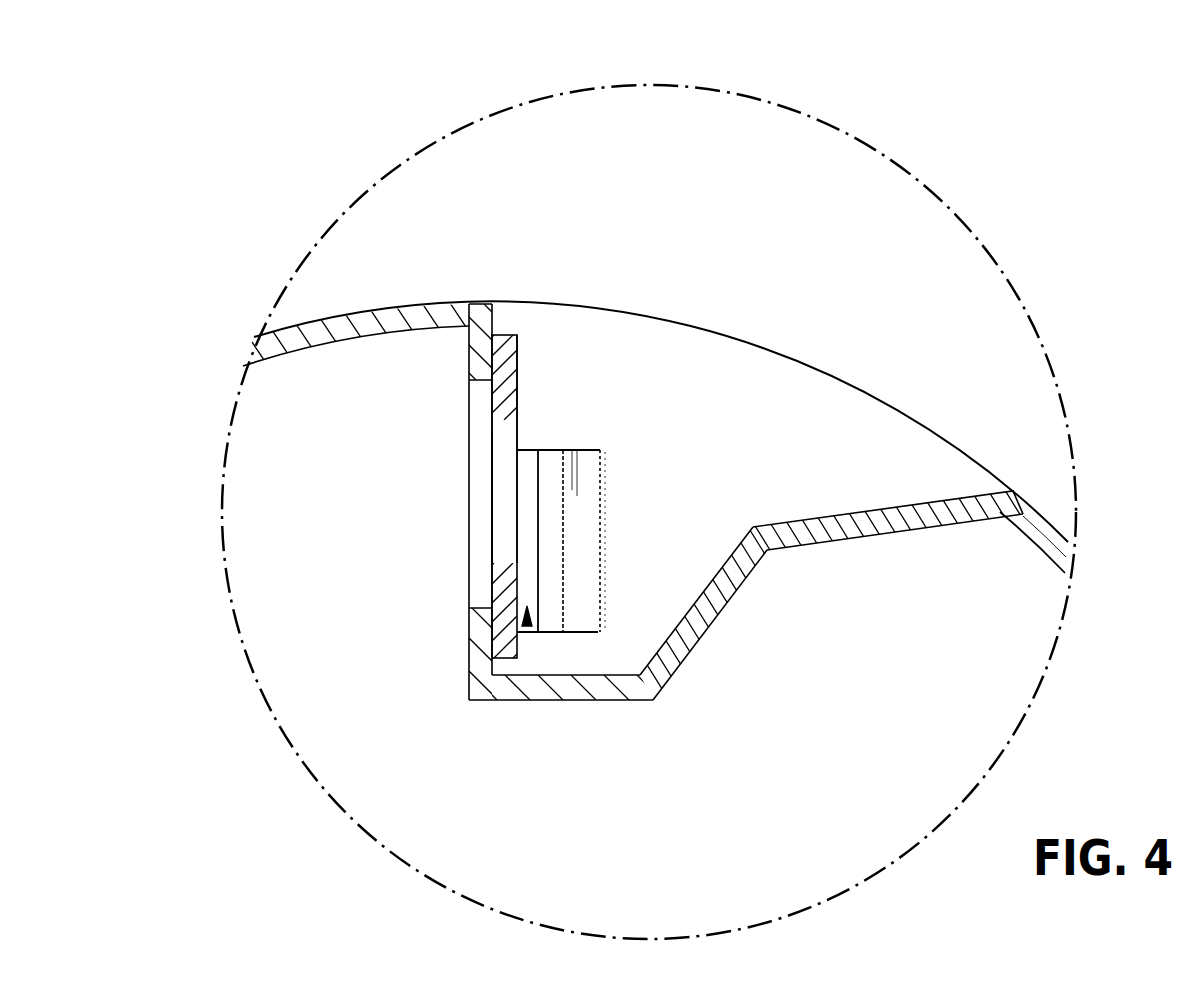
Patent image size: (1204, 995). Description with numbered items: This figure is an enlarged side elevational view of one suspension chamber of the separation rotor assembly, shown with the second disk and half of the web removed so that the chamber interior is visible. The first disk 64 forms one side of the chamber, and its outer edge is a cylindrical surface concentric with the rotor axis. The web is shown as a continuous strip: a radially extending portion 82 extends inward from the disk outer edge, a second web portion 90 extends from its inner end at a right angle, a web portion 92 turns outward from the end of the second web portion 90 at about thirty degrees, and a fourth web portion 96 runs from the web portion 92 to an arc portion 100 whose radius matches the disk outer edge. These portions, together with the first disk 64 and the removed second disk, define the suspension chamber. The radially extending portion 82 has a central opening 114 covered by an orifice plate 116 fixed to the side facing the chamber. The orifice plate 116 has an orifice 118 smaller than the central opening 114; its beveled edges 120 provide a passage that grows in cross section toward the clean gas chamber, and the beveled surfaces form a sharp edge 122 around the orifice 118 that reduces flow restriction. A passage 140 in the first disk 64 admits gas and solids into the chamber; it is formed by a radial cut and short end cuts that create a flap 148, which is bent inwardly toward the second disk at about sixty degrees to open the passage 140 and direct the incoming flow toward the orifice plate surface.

The first disk 64 is at (910, 413).
The radially extending portion 82 is at (469, 346).
The second web portion 90 is at (538, 700).
The web portion 92 is at (727, 560).
The fourth web portion 96 is at (878, 507).
The arc portion 100 is at (315, 320).
The central opening 114 is at (483, 387).
The orifice plate 116 is at (501, 496).
The orifice 118 is at (502, 515).
The beveled edges 120 is at (507, 423).
The sharp edge 122 is at (517, 432).
The passage 140 is at (527, 625).
The flap 148 is at (590, 460).